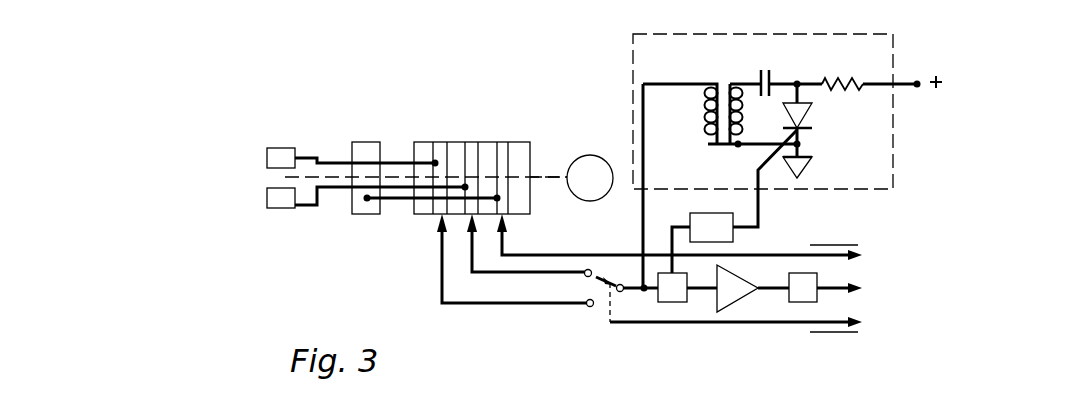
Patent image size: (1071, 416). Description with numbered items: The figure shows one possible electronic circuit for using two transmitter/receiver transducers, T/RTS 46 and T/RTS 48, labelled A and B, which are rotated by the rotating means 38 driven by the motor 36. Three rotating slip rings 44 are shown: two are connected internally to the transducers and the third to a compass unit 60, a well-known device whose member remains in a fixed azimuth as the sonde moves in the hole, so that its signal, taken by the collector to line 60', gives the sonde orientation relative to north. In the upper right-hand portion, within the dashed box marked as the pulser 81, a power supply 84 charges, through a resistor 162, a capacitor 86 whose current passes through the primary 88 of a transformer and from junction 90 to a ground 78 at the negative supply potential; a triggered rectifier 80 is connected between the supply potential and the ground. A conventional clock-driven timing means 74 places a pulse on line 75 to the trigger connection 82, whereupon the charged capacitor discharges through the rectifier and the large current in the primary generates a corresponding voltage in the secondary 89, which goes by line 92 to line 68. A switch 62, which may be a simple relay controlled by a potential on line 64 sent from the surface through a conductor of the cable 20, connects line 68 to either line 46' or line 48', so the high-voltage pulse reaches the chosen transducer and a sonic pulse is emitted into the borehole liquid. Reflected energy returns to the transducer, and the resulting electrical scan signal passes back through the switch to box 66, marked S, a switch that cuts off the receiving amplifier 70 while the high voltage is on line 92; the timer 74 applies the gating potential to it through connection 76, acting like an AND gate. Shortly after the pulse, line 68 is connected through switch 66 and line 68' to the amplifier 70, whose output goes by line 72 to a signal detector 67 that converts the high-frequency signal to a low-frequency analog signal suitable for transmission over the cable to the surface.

The T/RTS 46 is at (353, 141).
The T/RTS 48 is at (368, 215).
The compass unit 60 is at (426, 184).
The rotating slip rings 44 is at (497, 142).
The rotating means 38 is at (545, 178).
The motor 36 is at (609, 158).
The line 46' is at (513, 277).
The line 48' is at (529, 277).
The line 60' is at (679, 237).
The switch 62 is at (606, 316).
The line 68 is at (624, 259).
The line 64 is at (660, 322).
The cable 20 is at (837, 333).
The switch 66 is at (673, 302).
The line 68' is at (715, 318).
The receiving amplifier 70 is at (740, 271).
The line 72 is at (770, 292).
The signal detector 67 is at (820, 276).
The line 92 is at (642, 222).
The gating connection 76 is at (670, 228).
The timing means 74 is at (700, 213).
The line 75 is at (760, 213).
The pulser 81 is at (820, 33).
The secondary 89 is at (708, 87).
The primary 88 is at (731, 85).
The junction 90 is at (735, 148).
The capacitor 86 is at (770, 80).
The resistor 162 is at (833, 81).
The power supply 84 is at (918, 81).
The controlled rectifier 80 is at (812, 108).
The trigger connection 82 is at (788, 134).
The ground 78 is at (812, 170).